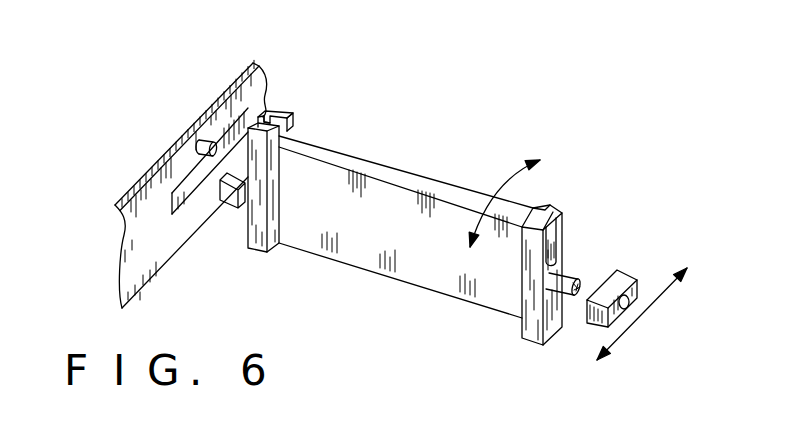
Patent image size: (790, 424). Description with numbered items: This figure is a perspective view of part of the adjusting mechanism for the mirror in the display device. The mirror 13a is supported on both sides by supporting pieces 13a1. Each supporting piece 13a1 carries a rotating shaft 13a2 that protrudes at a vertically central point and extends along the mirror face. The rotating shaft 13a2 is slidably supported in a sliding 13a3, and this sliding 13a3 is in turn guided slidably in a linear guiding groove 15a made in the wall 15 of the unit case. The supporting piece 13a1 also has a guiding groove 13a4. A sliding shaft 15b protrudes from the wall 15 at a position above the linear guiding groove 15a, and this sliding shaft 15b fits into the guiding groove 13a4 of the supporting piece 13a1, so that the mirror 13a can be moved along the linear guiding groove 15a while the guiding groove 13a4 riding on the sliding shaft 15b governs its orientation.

The mirror 13a is at (375, 165).
The supporting piece 13a1 is at (290, 118).
The rotating shaft 13a2 is at (569, 272).
The sliding 13a3 is at (600, 328).
The guiding groove 13a4 is at (274, 111).
The wall 15 is at (266, 84).
The linear guiding groove 15a is at (190, 195).
The sliding shaft 15b is at (191, 156).